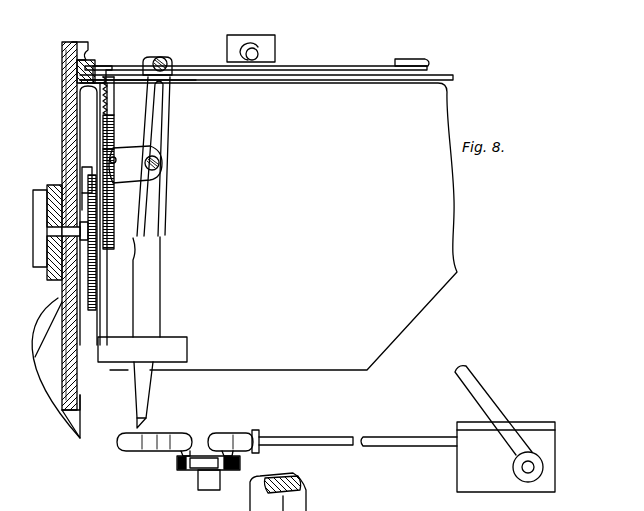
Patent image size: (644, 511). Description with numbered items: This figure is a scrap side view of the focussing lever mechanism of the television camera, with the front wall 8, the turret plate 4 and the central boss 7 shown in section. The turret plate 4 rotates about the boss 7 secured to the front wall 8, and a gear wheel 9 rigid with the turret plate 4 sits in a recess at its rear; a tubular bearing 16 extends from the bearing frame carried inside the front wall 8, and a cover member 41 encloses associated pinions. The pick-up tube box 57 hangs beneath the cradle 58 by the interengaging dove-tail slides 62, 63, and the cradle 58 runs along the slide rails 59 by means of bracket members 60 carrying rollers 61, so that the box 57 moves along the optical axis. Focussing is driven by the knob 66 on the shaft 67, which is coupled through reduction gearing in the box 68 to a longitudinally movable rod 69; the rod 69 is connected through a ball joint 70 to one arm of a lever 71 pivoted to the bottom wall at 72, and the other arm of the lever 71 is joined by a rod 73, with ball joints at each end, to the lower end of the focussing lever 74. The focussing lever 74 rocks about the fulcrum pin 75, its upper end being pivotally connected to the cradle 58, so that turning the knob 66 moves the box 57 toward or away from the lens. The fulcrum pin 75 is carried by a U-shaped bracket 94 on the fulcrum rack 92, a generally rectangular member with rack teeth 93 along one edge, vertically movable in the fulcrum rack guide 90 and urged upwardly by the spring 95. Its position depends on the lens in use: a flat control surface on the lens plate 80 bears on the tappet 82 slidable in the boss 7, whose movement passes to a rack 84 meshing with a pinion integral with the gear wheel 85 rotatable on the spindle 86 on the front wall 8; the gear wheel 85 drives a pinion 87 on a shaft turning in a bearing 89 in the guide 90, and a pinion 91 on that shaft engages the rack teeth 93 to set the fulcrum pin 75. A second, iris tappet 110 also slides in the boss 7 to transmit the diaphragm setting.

The turret plate 4 is at (60, 113).
The central boss 7 is at (60, 280).
The front wall 8 is at (78, 346).
The gear wheel 9 is at (62, 166).
The tubular bearing 16 is at (164, 57).
The cover member 41 is at (32, 220).
The box 57 is at (432, 211).
The cradle 58 is at (400, 64).
The slide rails 59 is at (333, 66).
The bracket members 60 is at (275, 48).
The rollers 61 is at (250, 44).
The dove-tail slide 62 is at (186, 77).
The dove-tail slide 63 is at (196, 85).
The focussing knob 66 is at (480, 388).
The shaft 67 is at (543, 462).
The box 68 is at (487, 493).
The longitudinally movable rod 69 is at (308, 441).
The ball joint 70 is at (240, 459).
The lever 71 is at (202, 430).
The pivot 72 is at (198, 481).
The rod 73 is at (165, 430).
The focussing lever 74 is at (160, 108).
The fulcrum pin 75 is at (160, 163).
The plate 80 is at (306, 497).
The tappet 82 is at (46, 258).
The rack 84 is at (95, 224).
The gear wheel 85 is at (96, 295).
The spindle 86 is at (70, 298).
The pinion 87 is at (62, 141).
The bearing 89 is at (116, 160).
The fulcrum rack guide 90 is at (98, 75).
The pinion 91 is at (112, 208).
The fulcrum rack 92 is at (115, 121).
The rack teeth 93 is at (115, 135).
The U-shaped bracket 94 is at (160, 145).
The spring 95 is at (114, 97).
The iris tappet 110 is at (52, 192).